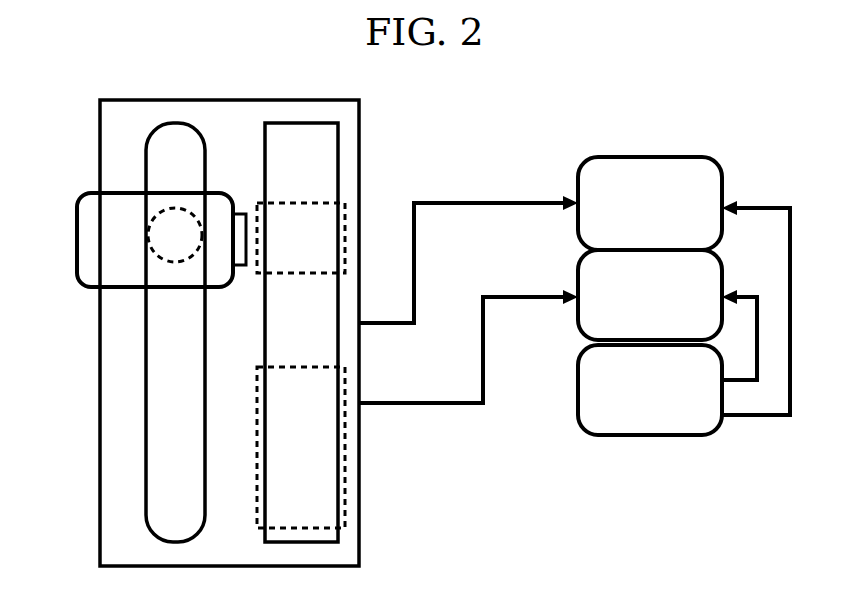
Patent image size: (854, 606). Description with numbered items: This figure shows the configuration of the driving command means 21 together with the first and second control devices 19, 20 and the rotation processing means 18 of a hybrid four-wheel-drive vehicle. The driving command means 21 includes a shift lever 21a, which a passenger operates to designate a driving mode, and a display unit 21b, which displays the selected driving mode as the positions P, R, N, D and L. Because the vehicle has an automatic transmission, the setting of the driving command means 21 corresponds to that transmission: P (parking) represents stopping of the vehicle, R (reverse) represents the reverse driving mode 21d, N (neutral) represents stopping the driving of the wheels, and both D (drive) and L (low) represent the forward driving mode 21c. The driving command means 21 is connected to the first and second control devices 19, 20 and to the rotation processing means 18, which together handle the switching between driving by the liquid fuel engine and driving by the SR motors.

The driving command means 21 is at (360, 540).
The shift lever 21a is at (88, 193).
The display unit 21b is at (338, 123).
The forward driving mode 21c is at (345, 470).
The reverse driving mode 21d is at (345, 203).
The second control device 20 is at (630, 200).
The first control device 19 is at (637, 302).
The rotation processing means 18 is at (637, 410).